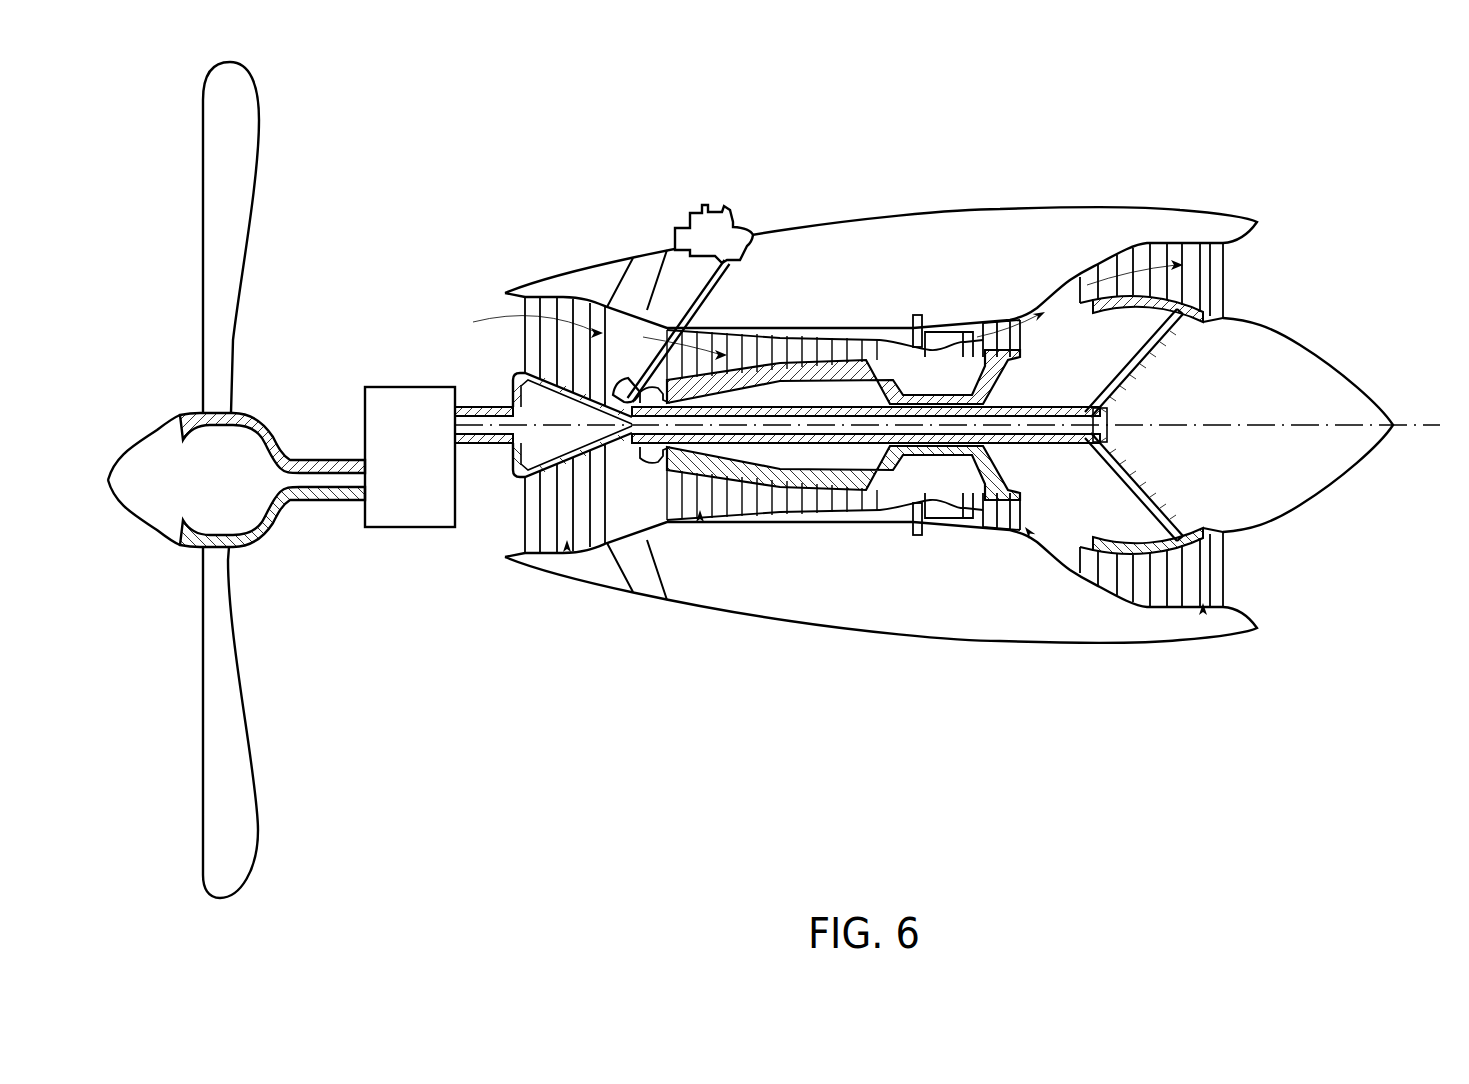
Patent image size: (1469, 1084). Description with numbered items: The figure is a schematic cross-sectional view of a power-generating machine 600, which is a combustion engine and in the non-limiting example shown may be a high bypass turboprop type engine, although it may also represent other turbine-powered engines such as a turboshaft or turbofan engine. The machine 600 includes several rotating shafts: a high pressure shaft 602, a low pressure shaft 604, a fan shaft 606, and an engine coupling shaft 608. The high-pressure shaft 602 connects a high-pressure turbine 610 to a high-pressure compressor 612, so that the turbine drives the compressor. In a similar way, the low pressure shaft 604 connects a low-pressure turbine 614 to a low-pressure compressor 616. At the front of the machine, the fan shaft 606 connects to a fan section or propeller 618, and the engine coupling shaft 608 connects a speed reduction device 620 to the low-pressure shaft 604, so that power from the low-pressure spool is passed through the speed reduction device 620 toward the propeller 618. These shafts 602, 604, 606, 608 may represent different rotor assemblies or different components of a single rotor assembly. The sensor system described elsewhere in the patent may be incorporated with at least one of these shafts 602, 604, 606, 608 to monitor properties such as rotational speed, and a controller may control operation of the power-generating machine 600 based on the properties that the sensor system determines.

The power-generating machine 600 is at (1047, 148).
The high pressure shaft 602 is at (960, 392).
The low pressure shaft 604 is at (1105, 403).
The fan shaft 606 is at (330, 460).
The engine coupling shaft 608 is at (485, 407).
The high-pressure turbine 610 is at (1030, 535).
The high-pressure compressor 612 is at (702, 520).
The low-pressure turbine 614 is at (1204, 613).
The low-pressure compressor 616 is at (567, 550).
The propeller 618 is at (180, 144).
The speed reduction device 620 is at (400, 387).